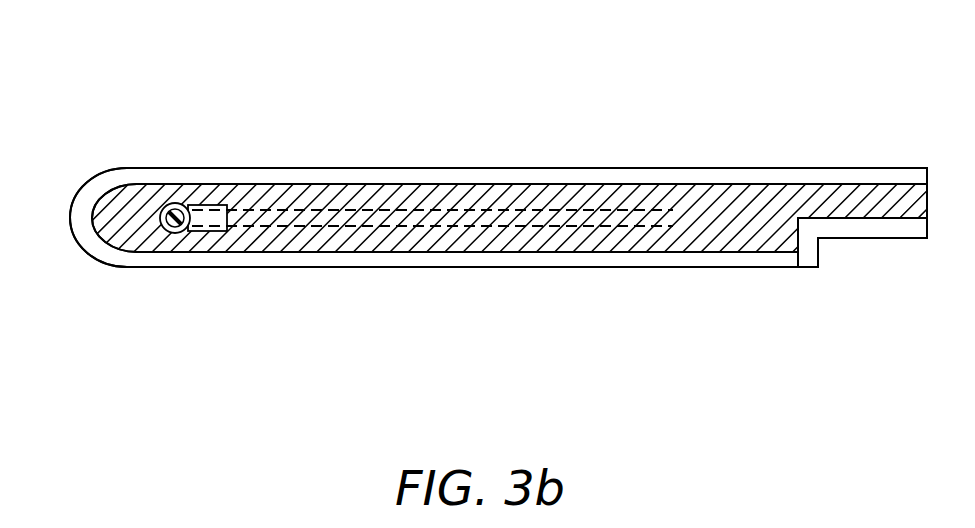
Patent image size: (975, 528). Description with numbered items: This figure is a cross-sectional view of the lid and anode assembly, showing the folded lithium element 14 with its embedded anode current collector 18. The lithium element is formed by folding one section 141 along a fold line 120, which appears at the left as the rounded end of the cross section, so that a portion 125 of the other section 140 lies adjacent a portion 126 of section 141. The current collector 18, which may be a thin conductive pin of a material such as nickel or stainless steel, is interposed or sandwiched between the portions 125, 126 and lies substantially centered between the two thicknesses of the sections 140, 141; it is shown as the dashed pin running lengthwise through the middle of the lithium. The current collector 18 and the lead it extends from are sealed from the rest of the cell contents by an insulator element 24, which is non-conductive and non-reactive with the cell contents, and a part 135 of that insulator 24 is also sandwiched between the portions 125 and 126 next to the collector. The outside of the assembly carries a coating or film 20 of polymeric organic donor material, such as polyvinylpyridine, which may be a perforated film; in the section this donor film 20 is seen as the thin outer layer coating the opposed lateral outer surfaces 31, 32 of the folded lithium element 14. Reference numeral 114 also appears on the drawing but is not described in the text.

The folded lithium element 14 is at (493, 254).
The anode current collector 18 is at (491, 205).
The polymeric organic donor film 20 is at (753, 168).
The insulator element 24 is at (176, 233).
The lateral surface 31 is at (326, 228).
The lateral surface 32 is at (406, 178).
The outer wall 114 is at (302, 180).
The fold line 120 is at (92, 220).
The portion of section 125 is at (646, 175).
The portion of section 126 is at (568, 253).
The part of insulator 135 is at (194, 204).
The section of lithium element 140 is at (833, 184).
The section of lithium element 141 is at (407, 259).